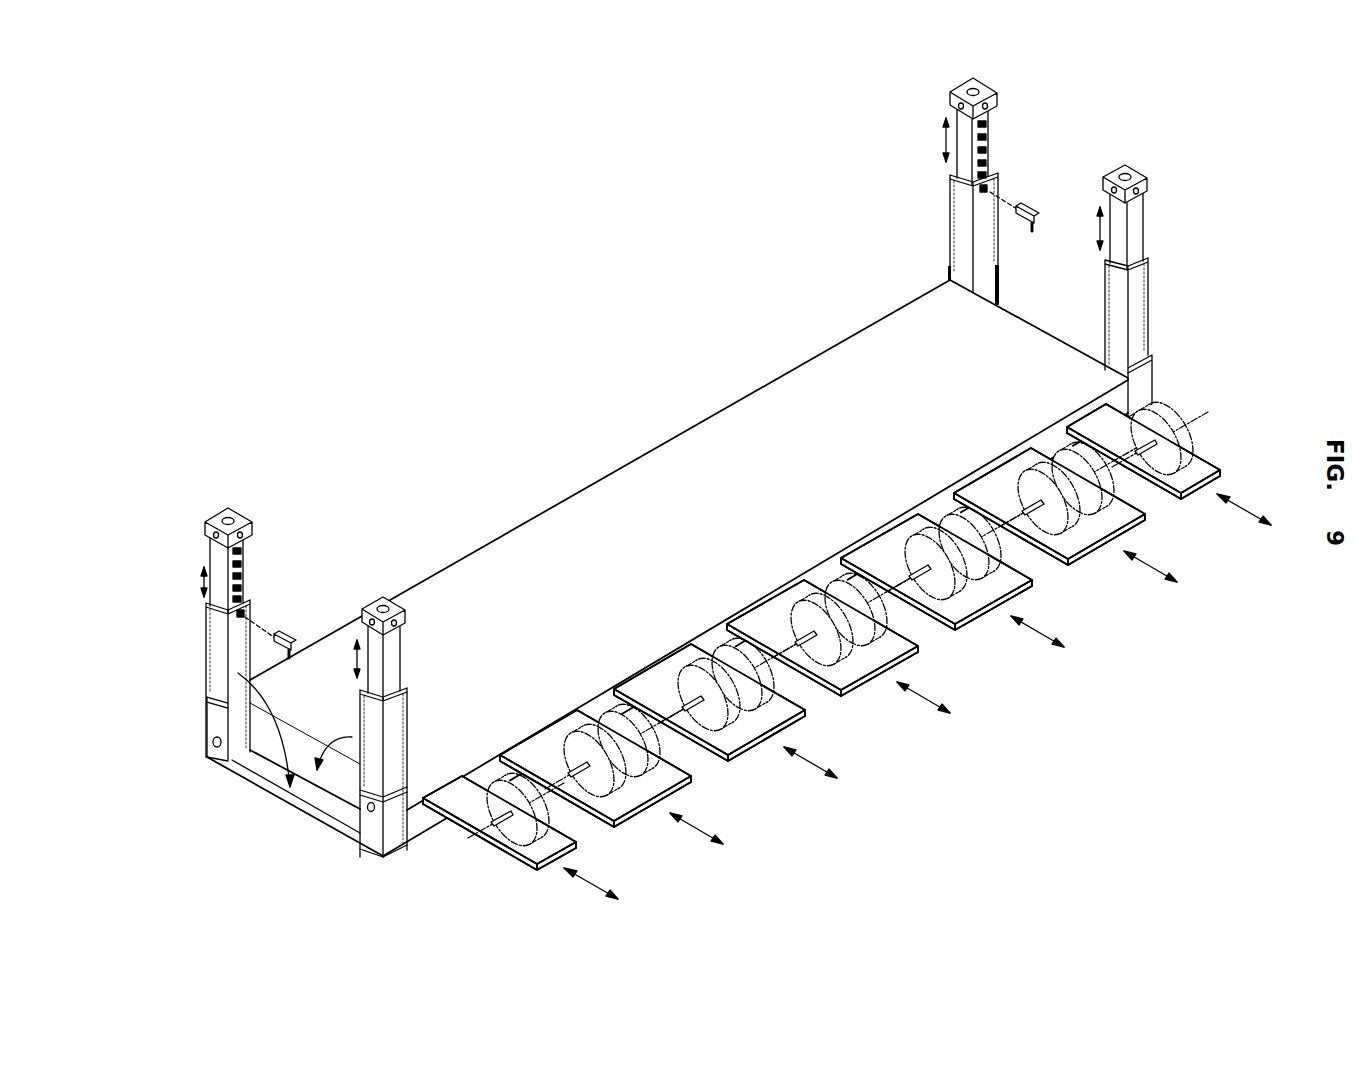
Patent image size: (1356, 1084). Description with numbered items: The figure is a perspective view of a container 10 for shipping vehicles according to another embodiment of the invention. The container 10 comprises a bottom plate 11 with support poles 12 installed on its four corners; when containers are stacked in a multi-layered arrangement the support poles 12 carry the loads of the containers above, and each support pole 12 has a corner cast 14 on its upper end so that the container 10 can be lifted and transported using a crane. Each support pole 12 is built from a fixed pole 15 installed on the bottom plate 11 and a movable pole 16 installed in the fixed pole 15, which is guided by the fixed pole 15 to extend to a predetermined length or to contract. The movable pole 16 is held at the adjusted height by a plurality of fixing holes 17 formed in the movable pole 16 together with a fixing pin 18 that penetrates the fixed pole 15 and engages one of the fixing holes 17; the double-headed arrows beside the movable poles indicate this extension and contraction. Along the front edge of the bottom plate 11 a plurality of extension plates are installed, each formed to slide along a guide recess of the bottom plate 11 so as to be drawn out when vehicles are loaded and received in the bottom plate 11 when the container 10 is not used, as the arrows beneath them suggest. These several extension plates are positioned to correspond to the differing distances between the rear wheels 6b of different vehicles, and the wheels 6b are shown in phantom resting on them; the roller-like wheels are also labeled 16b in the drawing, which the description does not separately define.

The container 10 is at (432, 313).
The bottom plate 11 is at (598, 497).
The support pole 12 is at (897, 97).
The corner cast 14 is at (996, 97).
The fixed pole 15 is at (955, 203).
The movable pole 16 is at (962, 128).
The fixing hole 17 is at (987, 124).
The fixing pin 18 is at (1030, 206).
The roller 16b is at (507, 822).
The rear wheel 6b is at (1188, 418).